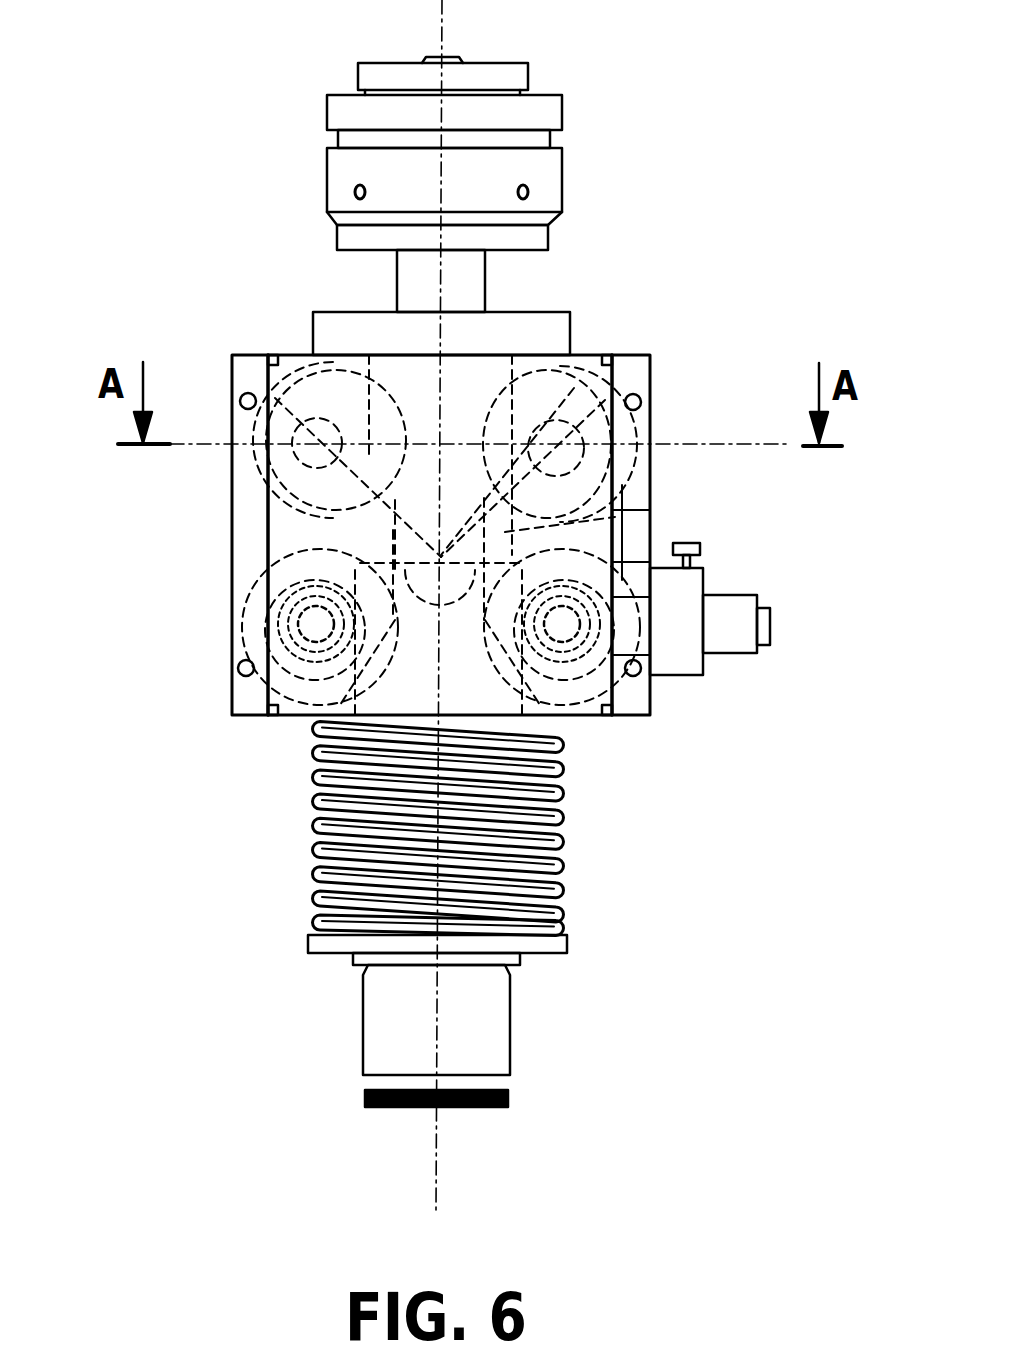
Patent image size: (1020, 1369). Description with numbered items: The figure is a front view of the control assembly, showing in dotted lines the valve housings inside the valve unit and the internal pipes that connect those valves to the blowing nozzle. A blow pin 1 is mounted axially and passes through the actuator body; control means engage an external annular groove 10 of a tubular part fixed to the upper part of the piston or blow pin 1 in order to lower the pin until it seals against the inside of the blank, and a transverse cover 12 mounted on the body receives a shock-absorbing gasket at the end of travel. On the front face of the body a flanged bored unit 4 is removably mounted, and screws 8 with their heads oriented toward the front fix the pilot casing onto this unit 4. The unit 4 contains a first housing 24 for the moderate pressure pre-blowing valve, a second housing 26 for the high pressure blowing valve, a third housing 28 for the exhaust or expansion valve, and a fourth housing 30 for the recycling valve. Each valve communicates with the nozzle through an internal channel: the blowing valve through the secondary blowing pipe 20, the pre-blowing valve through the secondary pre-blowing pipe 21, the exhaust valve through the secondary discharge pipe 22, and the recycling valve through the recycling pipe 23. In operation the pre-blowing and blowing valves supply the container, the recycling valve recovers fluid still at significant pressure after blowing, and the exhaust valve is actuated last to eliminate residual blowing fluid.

The blow pin 1 is at (485, 1032).
The unit 4 is at (652, 367).
The screws 8 is at (238, 671).
The external annular groove 10 is at (530, 145).
The transverse cover 12 is at (558, 333).
The secondary blowing pipe 20 is at (382, 537).
The secondary pre-blowing pipe 21 is at (330, 675).
The secondary discharge pipe 22 is at (560, 720).
The recycling pipe 23 is at (625, 512).
The first housing 24 is at (265, 683).
The second housing 26 is at (441, 555).
The third housing 28 is at (622, 676).
The fourth housing 30 is at (605, 470).